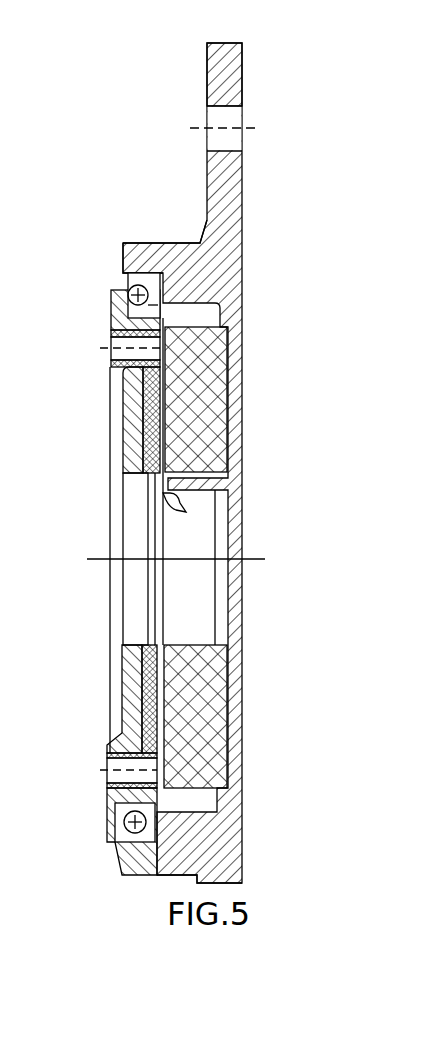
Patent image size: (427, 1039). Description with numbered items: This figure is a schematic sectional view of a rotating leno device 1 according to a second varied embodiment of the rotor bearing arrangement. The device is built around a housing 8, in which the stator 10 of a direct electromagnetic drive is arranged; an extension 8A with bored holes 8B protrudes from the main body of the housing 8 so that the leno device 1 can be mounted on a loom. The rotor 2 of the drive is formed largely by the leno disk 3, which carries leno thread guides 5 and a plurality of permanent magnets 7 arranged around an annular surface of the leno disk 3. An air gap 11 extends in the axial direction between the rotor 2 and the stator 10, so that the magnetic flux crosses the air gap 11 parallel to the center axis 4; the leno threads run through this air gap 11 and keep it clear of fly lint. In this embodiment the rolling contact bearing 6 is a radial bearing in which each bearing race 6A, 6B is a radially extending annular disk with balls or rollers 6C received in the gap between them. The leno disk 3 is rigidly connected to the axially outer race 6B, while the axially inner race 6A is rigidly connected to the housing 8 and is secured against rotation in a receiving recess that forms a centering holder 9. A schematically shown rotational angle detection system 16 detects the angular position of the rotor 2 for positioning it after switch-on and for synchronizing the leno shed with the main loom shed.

The rotating leno device 1 is at (163, 197).
The rotor 2 is at (86, 465).
The leno disk 3 is at (123, 412).
The center axis 4 is at (250, 563).
The leno thread guides 5 is at (120, 355).
The rolling contact bearing 6 is at (156, 277).
The inner bearing race 6A is at (157, 292).
The outer bearing race 6B is at (242, 257).
The balls or rollers 6C is at (124, 273).
The permanent magnets 7 is at (128, 473).
The housing 8 is at (193, 840).
The extension 8A is at (232, 73).
The bored holes 8B is at (228, 118).
The centering holder 9 is at (149, 866).
The stator 10 is at (197, 406).
The air gap 11 is at (157, 603).
The rotational angle detection system 16 is at (186, 522).